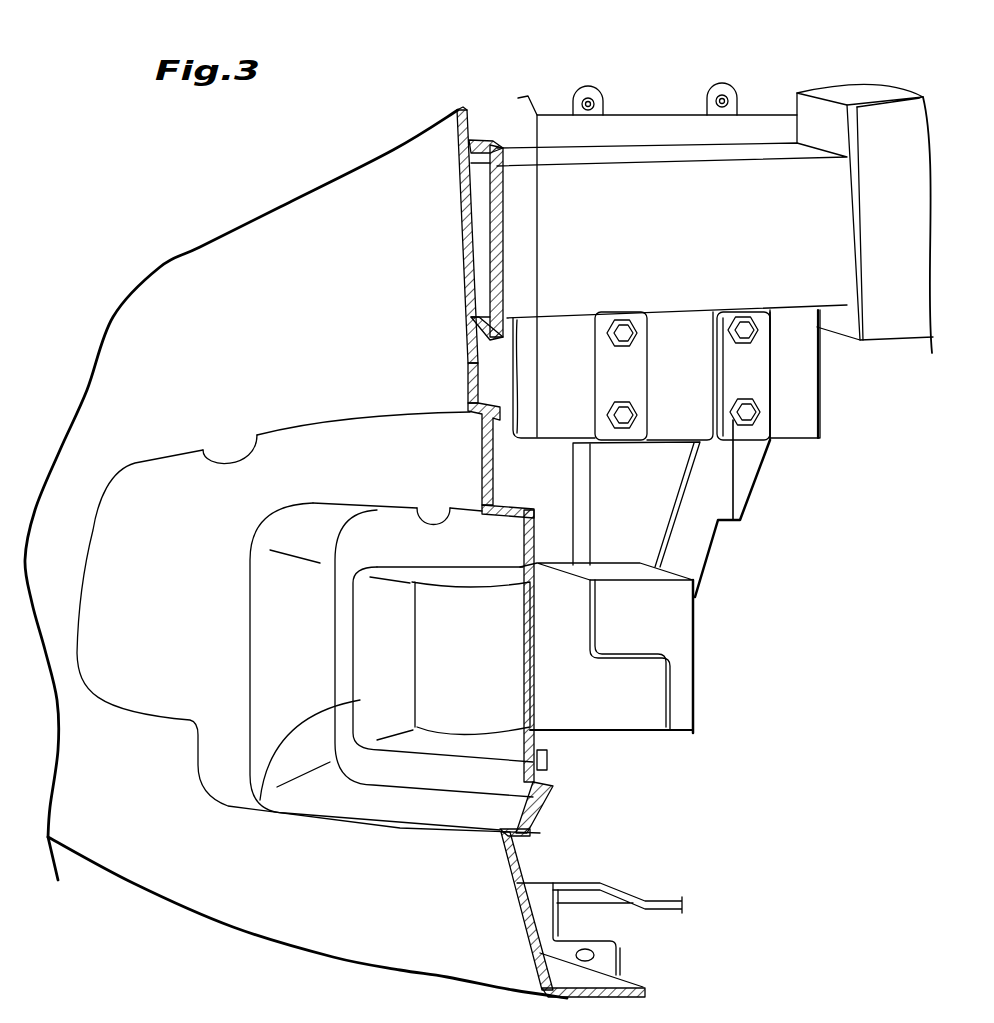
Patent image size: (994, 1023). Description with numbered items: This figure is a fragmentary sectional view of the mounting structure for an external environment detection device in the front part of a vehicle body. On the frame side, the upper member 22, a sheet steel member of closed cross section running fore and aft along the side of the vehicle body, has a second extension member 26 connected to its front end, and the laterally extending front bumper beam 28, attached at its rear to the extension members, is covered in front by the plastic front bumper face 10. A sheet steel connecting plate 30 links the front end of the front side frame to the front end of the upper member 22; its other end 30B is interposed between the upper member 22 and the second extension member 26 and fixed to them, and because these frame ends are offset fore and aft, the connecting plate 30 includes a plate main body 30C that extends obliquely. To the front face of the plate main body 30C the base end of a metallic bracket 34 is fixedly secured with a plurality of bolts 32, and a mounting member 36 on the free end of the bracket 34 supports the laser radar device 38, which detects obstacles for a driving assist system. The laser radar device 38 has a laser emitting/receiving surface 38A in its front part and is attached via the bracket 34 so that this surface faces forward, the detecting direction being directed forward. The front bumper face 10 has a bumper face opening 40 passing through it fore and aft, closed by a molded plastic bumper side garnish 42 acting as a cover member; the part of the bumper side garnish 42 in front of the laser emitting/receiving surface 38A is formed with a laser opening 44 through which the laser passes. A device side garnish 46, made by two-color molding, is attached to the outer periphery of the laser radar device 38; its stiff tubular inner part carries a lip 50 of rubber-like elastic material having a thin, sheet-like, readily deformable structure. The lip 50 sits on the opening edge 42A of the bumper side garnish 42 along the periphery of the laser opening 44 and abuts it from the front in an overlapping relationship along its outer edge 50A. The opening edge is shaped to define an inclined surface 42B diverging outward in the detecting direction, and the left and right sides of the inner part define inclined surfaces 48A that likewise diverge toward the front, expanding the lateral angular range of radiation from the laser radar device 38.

The front bumper face 10 is at (230, 257).
The upper member 22 is at (913, 327).
The second extension member 26 is at (636, 175).
The front bumper beam 28 is at (508, 163).
The connecting plate 30 is at (671, 108).
The other end of connecting plate 30B is at (797, 93).
The plate main body 30C is at (803, 390).
The bolts 32 is at (648, 413).
The bracket 34 is at (715, 505).
The mounting member 36 is at (670, 641).
The laser radar device 38 is at (600, 693).
The laser emitting/receiving surface 38A is at (495, 678).
The bumper face opening 40 is at (237, 463).
The bumper side garnish 42 is at (323, 453).
The opening edge 42A is at (543, 557).
The inclined surface 42B is at (262, 633).
The laser opening 44 is at (447, 519).
The device side garnish 46 is at (400, 770).
The inclined surfaces 48A is at (267, 767).
The lip 50 is at (548, 547).
The outer edge 50A is at (522, 516).